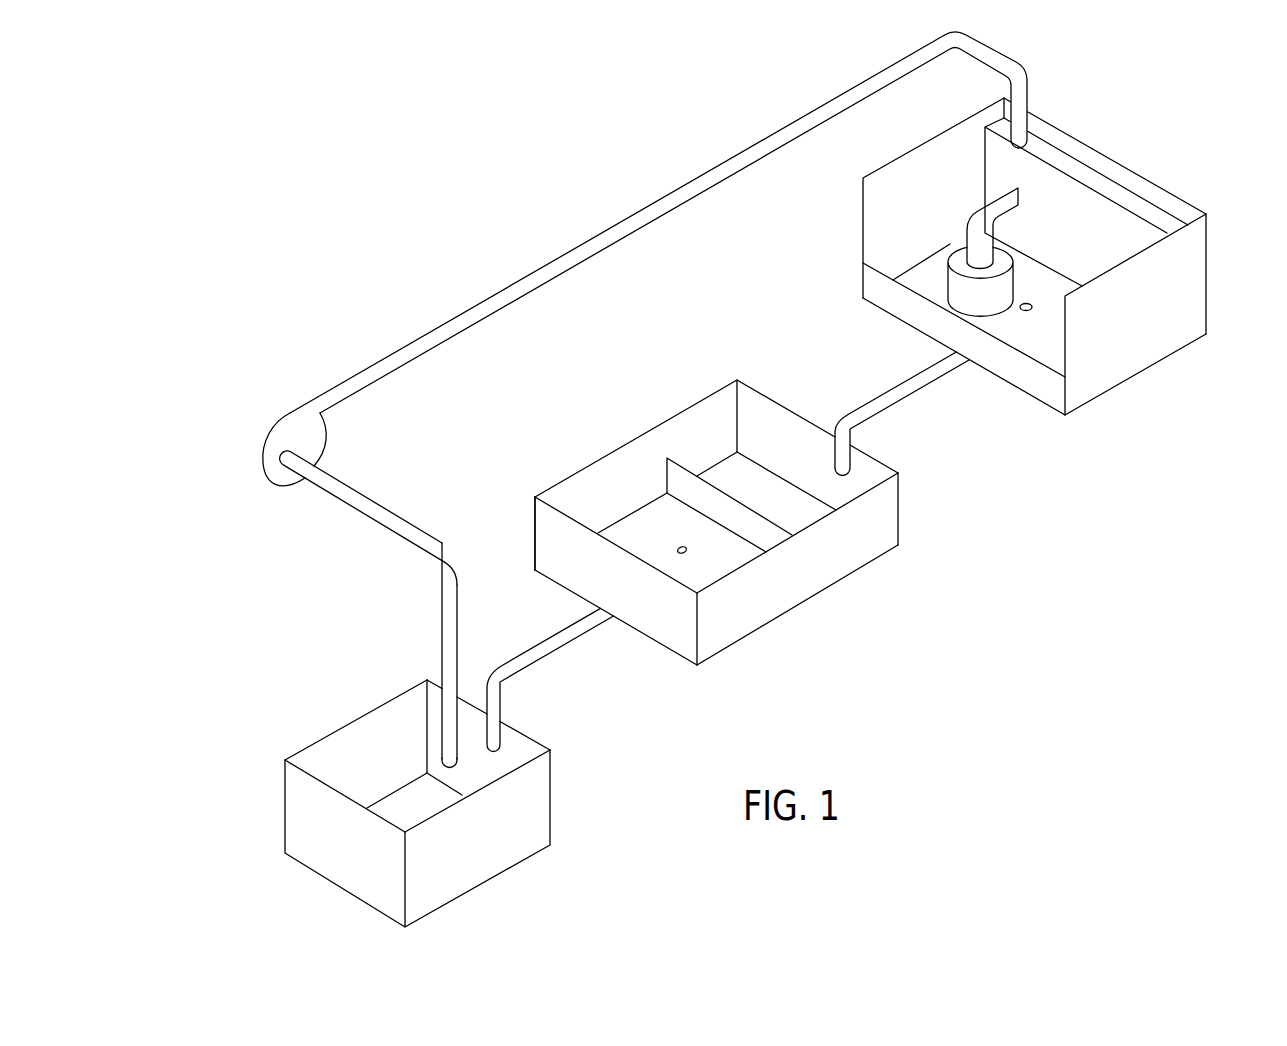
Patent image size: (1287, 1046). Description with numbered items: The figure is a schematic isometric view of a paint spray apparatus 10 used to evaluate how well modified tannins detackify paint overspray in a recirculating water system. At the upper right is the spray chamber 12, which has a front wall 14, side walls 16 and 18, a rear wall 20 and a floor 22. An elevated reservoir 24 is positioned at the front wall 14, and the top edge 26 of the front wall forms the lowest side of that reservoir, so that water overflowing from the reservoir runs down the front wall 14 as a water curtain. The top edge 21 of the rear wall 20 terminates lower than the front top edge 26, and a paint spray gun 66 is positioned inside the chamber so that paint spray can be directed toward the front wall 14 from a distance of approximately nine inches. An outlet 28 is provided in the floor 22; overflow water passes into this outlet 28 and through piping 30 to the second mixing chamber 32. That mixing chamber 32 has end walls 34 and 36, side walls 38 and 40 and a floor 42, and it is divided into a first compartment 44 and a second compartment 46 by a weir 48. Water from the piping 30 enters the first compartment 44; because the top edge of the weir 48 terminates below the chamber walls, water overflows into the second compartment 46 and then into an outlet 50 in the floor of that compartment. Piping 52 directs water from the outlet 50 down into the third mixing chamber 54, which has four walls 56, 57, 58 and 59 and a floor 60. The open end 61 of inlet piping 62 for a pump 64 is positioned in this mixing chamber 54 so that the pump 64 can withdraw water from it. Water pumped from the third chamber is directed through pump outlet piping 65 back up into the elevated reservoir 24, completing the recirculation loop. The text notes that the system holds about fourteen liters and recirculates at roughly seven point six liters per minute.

The paint spray apparatus 10 is at (440, 570).
The spray chamber 12 is at (1208, 287).
The front wall 14 is at (1072, 234).
The side wall 16 is at (960, 184).
The side wall 18 is at (1147, 321).
The rear wall 20 is at (1017, 377).
The top edge of the rear wall 21 is at (876, 267).
The floor 22 is at (1049, 349).
The elevated reservoir 24 is at (1145, 185).
The top edge of the front wall 26 is at (1072, 173).
The outlet 28 is at (1033, 300).
The piping 30 is at (892, 385).
The second mixing chamber 32 is at (638, 437).
The end wall 34 is at (799, 461).
The end wall 36 is at (607, 581).
The side wall 38 is at (634, 497).
The side wall 40 is at (869, 551).
The floor 42 is at (734, 567).
The first compartment 44 is at (710, 407).
The second compartment 46 is at (568, 495).
The weir 48 is at (760, 531).
The outlet 50 is at (677, 548).
The piping 52 is at (748, 505).
The third mixing chamber 54 is at (332, 728).
The wall 56 is at (490, 781).
The wall 57 is at (492, 854).
The wall 58 is at (357, 864).
The wall 59 is at (370, 781).
The floor 60 is at (422, 817).
The open end of inlet piping 61 is at (438, 760).
The inlet piping 62 is at (458, 670).
The pump 64 is at (262, 450).
The pump outlet piping 65 is at (655, 203).
The paint spray gun 66 is at (963, 223).